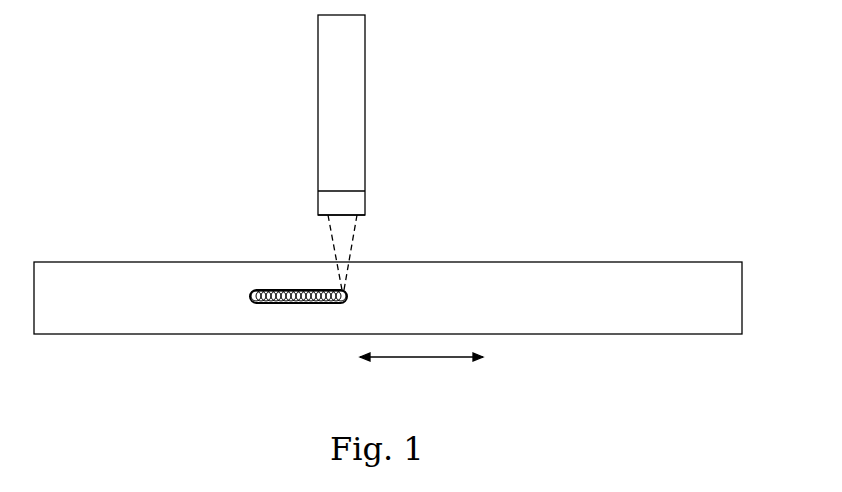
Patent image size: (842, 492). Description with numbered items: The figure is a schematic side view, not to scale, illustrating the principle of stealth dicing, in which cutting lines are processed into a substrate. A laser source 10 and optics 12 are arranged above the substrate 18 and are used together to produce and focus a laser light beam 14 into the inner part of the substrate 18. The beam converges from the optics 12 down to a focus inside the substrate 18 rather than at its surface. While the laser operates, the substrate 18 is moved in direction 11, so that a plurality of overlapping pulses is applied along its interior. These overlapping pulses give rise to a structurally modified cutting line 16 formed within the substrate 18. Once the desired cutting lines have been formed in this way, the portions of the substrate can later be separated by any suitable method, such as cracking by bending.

The laser source 10 is at (353, 106).
The direction 11 is at (422, 359).
The optics 12 is at (353, 209).
The laser light beam 14 is at (343, 243).
The structurally modified cutting line 16 is at (343, 287).
The substrate 18 is at (615, 278).